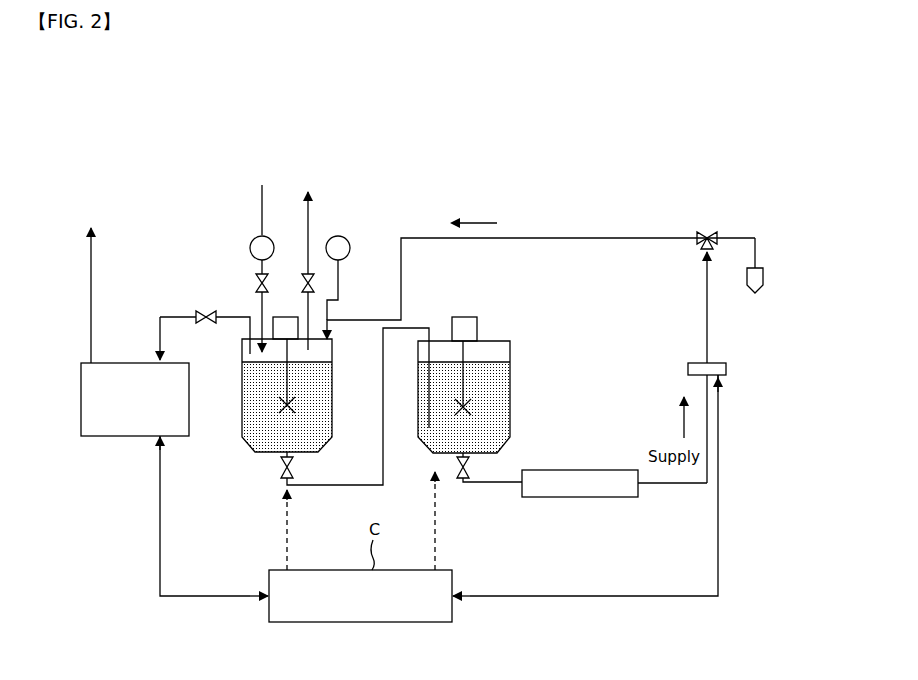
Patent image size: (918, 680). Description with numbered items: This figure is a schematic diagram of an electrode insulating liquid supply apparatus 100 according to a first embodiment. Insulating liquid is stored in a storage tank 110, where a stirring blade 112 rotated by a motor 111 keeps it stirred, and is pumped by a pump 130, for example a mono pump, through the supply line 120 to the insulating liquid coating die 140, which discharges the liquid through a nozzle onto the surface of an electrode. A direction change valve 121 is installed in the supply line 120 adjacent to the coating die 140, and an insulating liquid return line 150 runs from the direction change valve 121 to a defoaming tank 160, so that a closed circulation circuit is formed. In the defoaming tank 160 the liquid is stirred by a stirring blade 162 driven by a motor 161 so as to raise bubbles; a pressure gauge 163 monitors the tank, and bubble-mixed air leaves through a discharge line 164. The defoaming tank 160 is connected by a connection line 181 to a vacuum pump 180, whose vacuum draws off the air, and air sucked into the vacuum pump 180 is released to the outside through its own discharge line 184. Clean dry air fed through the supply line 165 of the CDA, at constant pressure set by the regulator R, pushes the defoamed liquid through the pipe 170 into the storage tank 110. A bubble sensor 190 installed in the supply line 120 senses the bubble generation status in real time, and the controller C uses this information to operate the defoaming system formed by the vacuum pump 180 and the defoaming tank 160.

The electrode insulating liquid supply apparatus 100 is at (779, 157).
The storage tank 110 is at (512, 377).
The motor 111 is at (478, 328).
The stirring blade 112 is at (471, 407).
The supply line 120 is at (709, 322).
The direction change valve 121 is at (708, 229).
The pump 130 is at (605, 468).
The insulating liquid coating die 140 is at (764, 277).
The insulating liquid return line 150 is at (620, 238).
The defoaming tank 160 is at (334, 372).
The motor 161 is at (285, 317).
The stirring blade 162 is at (295, 406).
The pressure gauge 163 is at (349, 253).
The discharge line 164 is at (310, 238).
The supply line of the CDA 165 is at (253, 276).
The pipe 170 is at (383, 453).
The vacuum pump 180 is at (124, 438).
The connection line 181 is at (222, 320).
The discharge line 184 is at (90, 298).
The bubble sensor 190 is at (728, 368).